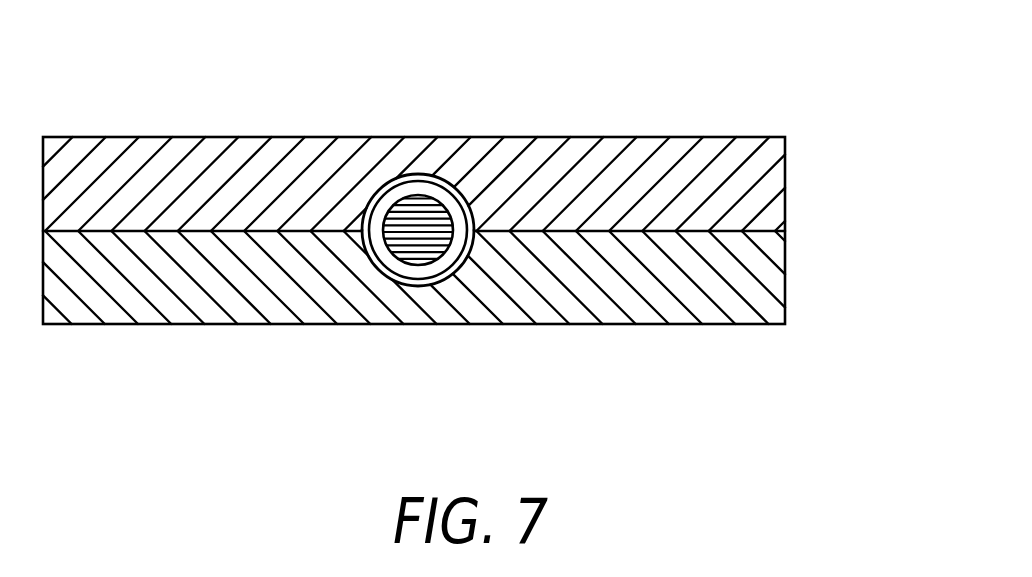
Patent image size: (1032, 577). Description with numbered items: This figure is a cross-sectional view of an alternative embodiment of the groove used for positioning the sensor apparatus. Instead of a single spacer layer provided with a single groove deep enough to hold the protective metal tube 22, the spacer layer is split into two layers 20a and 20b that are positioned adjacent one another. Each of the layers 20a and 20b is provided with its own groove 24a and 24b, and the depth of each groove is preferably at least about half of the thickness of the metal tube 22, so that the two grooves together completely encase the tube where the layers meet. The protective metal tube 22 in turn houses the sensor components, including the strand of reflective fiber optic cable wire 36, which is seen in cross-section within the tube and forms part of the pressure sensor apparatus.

The spacer layer 20a is at (735, 182).
The spacer layer 20b is at (735, 305).
The protective metal tube 22 is at (385, 178).
The groove 24a is at (428, 175).
The groove 24b is at (457, 268).
The reflective fiber optic cable wire 36 is at (403, 232).